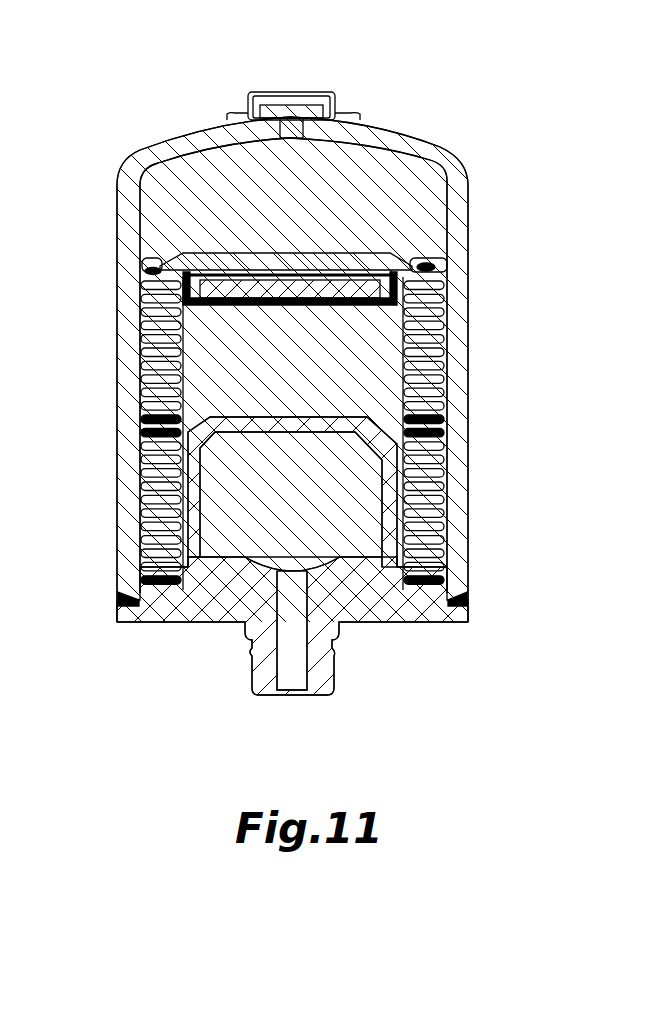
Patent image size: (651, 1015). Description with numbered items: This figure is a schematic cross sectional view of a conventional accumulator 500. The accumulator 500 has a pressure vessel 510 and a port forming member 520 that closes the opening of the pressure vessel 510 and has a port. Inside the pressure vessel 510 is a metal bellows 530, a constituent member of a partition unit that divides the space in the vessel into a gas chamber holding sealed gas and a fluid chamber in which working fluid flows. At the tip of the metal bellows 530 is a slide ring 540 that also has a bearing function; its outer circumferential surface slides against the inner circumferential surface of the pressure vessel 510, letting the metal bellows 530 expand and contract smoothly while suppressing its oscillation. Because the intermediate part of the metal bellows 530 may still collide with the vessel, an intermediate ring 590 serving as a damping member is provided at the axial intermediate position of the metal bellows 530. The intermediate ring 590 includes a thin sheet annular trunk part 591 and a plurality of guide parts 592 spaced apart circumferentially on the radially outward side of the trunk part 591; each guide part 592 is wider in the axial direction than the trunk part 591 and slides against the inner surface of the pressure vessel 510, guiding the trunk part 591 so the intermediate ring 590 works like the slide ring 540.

The accumulator 500 is at (472, 102).
The pressure vessel 510 is at (134, 242).
The port forming member 520 is at (197, 608).
The metal bellows 530 is at (443, 327).
The slide ring 540 is at (449, 256).
The intermediate ring 590 is at (455, 409).
The trunk part 591 is at (410, 407).
The guide part 592 is at (447, 417).